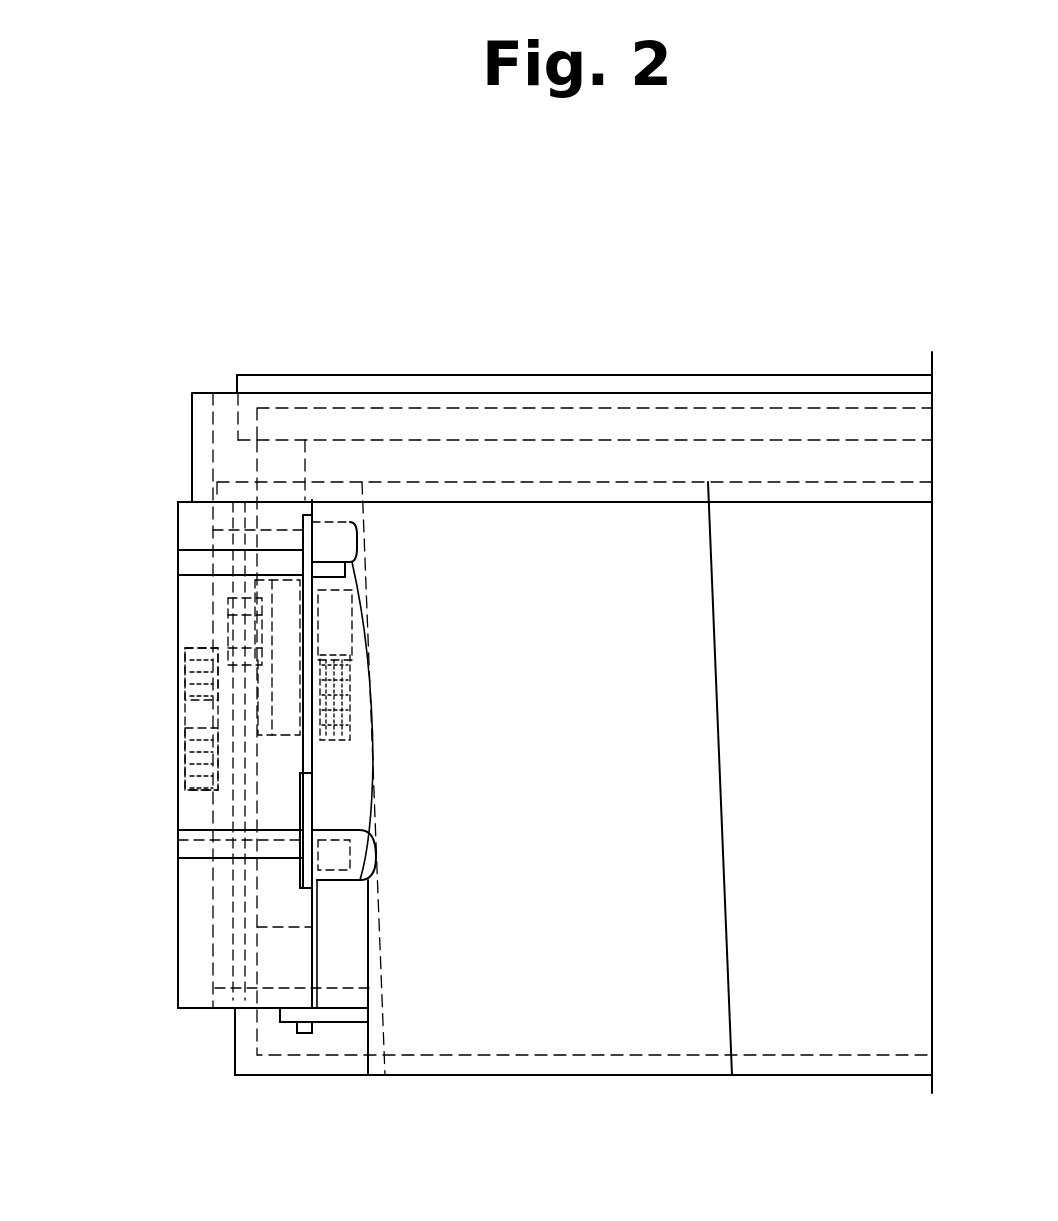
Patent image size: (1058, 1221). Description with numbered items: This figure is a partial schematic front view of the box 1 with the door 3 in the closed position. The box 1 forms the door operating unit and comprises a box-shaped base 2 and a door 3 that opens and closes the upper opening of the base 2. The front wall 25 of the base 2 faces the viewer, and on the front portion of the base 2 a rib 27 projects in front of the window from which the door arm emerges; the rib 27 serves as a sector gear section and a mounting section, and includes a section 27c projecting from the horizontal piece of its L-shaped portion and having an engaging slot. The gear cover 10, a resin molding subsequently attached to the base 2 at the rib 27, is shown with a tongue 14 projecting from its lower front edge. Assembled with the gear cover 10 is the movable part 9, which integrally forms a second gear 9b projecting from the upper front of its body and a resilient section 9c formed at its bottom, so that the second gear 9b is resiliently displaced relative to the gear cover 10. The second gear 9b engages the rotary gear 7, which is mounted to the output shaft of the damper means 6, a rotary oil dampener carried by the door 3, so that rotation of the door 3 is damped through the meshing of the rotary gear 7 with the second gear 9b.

The box 1 is at (172, 162).
The box-shaped base 2 is at (222, 383).
The door 3 is at (290, 358).
The damper means 6 is at (277, 657).
The rotary gear 7 is at (215, 615).
The movable part 9 is at (201, 719).
The second gear 9b is at (215, 688).
The resilient section 9c is at (190, 812).
The gear cover 10 is at (191, 1016).
The tongue 14 is at (300, 1024).
The front wall 25 is at (833, 1035).
The rib 27 is at (345, 818).
The section having engaging slot 27c is at (340, 1015).